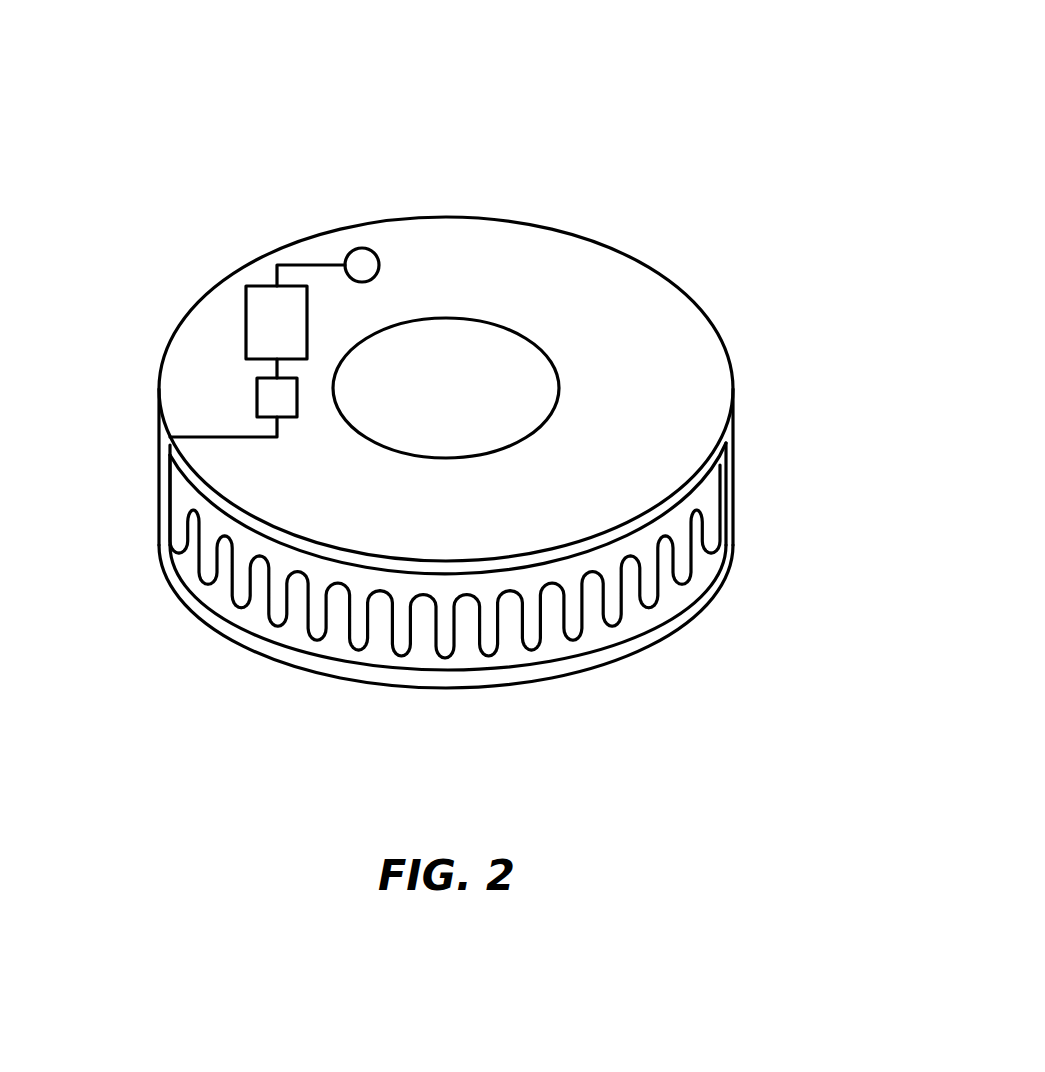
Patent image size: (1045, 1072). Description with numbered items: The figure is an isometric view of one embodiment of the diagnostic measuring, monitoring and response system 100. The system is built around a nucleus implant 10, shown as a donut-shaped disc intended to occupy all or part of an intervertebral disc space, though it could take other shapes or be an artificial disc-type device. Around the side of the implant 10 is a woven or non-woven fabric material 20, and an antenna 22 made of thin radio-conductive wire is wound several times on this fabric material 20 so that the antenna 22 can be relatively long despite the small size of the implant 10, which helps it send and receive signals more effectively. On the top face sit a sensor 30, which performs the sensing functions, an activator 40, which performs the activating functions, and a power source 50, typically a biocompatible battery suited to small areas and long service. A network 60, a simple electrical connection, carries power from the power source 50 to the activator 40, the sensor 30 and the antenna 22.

The diagnostic measuring, monitoring and response system 100 is at (605, 108).
The nucleus implant 10 is at (640, 315).
The fabric material 20 is at (675, 603).
The antenna 22 is at (587, 630).
The sensor 30 is at (272, 398).
The activator 40 is at (260, 318).
The power source 50 is at (354, 262).
The network 60 is at (297, 263).